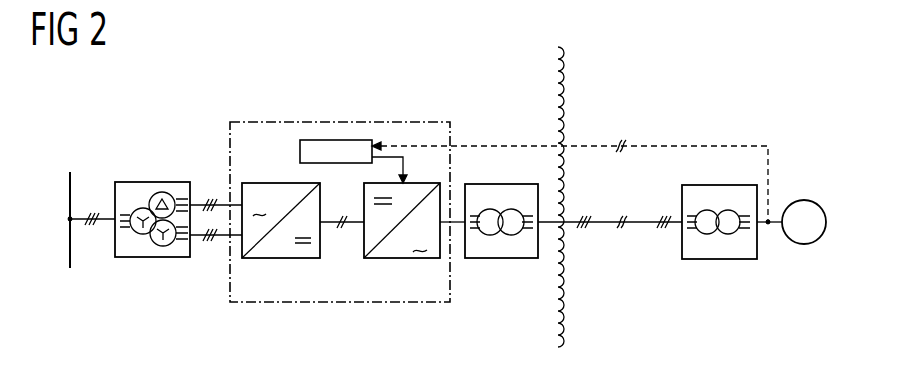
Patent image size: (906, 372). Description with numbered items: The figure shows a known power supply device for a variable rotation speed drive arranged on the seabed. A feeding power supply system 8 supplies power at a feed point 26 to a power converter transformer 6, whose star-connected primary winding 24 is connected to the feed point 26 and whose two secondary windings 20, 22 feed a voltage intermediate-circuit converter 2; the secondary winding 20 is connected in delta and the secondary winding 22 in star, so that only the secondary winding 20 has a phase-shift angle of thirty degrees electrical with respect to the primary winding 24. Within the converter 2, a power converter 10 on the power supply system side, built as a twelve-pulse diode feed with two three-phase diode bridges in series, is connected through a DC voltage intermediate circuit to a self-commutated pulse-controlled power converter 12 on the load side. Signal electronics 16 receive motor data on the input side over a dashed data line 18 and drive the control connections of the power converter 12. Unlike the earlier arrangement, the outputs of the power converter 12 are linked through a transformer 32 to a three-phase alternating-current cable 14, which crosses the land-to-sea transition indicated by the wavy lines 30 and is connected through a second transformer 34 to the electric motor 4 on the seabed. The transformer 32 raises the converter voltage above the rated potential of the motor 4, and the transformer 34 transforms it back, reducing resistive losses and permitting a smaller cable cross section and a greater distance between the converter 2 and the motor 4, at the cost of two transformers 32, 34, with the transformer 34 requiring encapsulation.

The voltage intermediate-circuit converter 2 is at (268, 122).
The electric motor 4 is at (804, 244).
The power converter transformer 6 is at (151, 216).
The feeding power supply system 8 is at (68, 184).
The power converter on the power supply system side 10 is at (280, 258).
The self-commutated pulse-controlled power converter 12 is at (400, 258).
The three-phase alternating-current cable 14 is at (641, 224).
The signal electronics 16 is at (338, 140).
The data line 18 is at (596, 146).
The secondary winding 20 is at (162, 192).
The secondary winding 22 is at (163, 246).
The primary winding 24 is at (141, 234).
The feed point 26 is at (70, 219).
The wavy lines 30 is at (567, 330).
The transformer 32 is at (500, 258).
The second transformer 34 is at (718, 259).